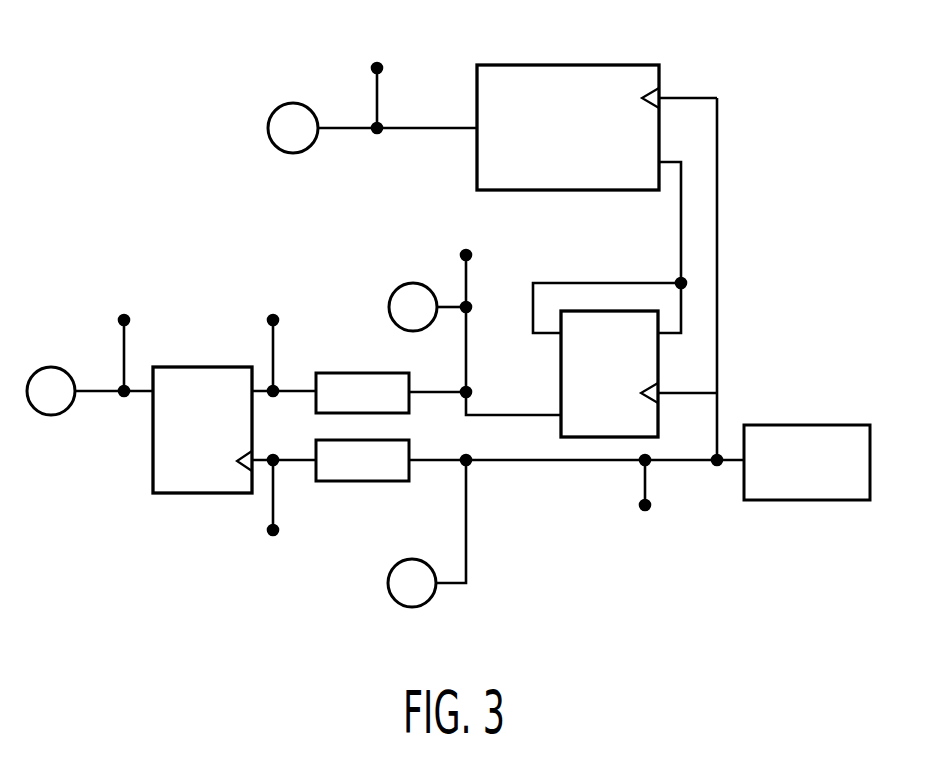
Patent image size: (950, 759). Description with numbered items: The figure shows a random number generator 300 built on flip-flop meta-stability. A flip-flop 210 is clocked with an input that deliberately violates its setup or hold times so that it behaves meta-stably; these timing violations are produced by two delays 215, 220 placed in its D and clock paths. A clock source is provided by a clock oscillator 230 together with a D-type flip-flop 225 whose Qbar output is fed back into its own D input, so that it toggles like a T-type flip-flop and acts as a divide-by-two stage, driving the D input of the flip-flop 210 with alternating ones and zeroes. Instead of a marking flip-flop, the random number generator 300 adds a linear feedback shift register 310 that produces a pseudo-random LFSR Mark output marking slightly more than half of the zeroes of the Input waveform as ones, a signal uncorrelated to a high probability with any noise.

The random number generator 300 is at (178, 163).
The flip-flop 210 is at (200, 367).
The delay 215 is at (363, 373).
The delay 220 is at (365, 482).
The D-type flip-flop 225 is at (561, 378).
The clock oscillator 230 is at (810, 425).
The linear feedback shift register 310 is at (612, 65).